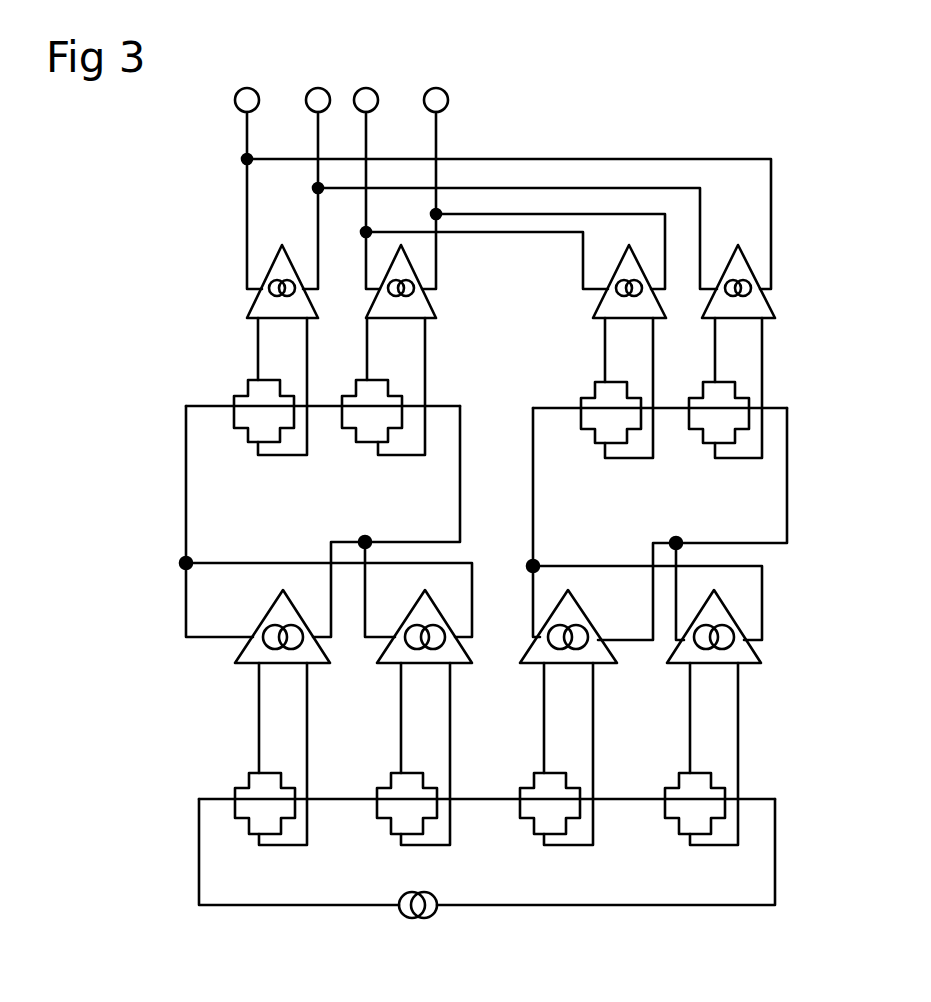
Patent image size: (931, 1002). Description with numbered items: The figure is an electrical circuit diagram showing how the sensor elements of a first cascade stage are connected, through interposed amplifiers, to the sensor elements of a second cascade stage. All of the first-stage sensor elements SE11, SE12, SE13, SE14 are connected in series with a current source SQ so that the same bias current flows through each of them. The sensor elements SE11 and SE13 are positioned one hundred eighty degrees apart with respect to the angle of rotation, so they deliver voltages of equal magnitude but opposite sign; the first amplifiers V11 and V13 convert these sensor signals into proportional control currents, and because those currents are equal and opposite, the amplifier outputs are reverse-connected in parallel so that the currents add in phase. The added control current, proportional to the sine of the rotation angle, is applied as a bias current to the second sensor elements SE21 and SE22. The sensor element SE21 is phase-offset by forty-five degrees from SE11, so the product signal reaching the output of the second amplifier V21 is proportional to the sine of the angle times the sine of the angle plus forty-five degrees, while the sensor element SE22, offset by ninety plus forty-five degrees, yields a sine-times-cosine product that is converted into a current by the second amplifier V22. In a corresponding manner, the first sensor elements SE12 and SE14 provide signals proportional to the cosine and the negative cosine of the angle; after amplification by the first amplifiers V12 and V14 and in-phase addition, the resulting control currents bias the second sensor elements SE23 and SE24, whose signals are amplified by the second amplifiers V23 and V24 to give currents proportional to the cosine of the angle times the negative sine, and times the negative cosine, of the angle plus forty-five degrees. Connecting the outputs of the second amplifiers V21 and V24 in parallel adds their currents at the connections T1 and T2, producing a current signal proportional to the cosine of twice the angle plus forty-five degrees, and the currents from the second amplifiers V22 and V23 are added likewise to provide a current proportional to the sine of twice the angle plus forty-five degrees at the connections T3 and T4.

The connection T1 is at (247, 88).
The connection T2 is at (318, 88).
The connection T3 is at (366, 88).
The connection T4 is at (436, 88).
The first amplifier V11 is at (238, 648).
The first amplifier V12 is at (584, 606).
The first amplifier V13 is at (440, 615).
The first amplifier V14 is at (760, 645).
The second amplifier V21 is at (255, 310).
The second amplifier V22 is at (445, 295).
The second amplifier V23 is at (628, 300).
The second amplifier V24 is at (778, 300).
The sensor element SE11 is at (246, 779).
The sensor element SE12 is at (522, 780).
The sensor element SE13 is at (380, 780).
The sensor element SE14 is at (668, 782).
The second sensor element SE21 is at (246, 390).
The second sensor element SE22 is at (390, 386).
The second sensor element SE23 is at (645, 432).
The second sensor element SE24 is at (748, 400).
The current source SQ is at (434, 912).